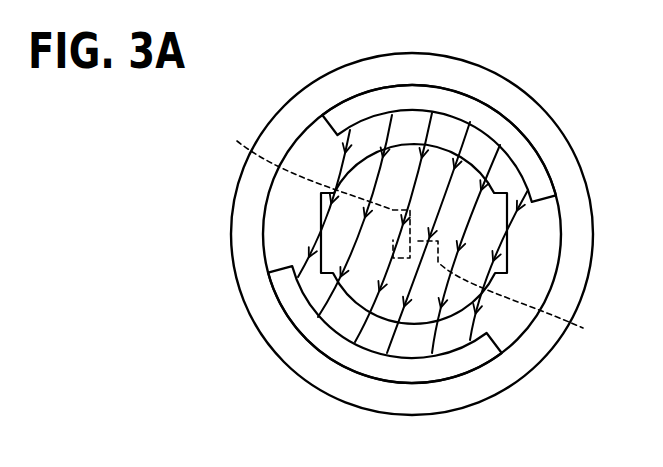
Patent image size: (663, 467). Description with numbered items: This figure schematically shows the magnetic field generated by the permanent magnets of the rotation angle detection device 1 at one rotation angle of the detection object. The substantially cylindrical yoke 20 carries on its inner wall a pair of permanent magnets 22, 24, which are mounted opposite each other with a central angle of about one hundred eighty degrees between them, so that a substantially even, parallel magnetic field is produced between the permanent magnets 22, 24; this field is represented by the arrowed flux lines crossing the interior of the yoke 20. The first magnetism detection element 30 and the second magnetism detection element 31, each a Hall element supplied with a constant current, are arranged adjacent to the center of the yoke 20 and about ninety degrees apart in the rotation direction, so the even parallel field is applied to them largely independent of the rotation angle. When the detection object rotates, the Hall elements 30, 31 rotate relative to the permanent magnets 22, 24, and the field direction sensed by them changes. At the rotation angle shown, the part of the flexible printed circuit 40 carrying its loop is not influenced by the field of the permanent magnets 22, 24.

The rotation angle detection device 1 is at (577, 82).
The yoke 20 is at (391, 62).
The permanent magnet 22 is at (462, 102).
The permanent magnet 24 is at (357, 358).
The first magnetism detection element 30 is at (309, 188).
The second magnetism detection element 31 is at (515, 296).
The flexible printed circuit 40 is at (507, 243).